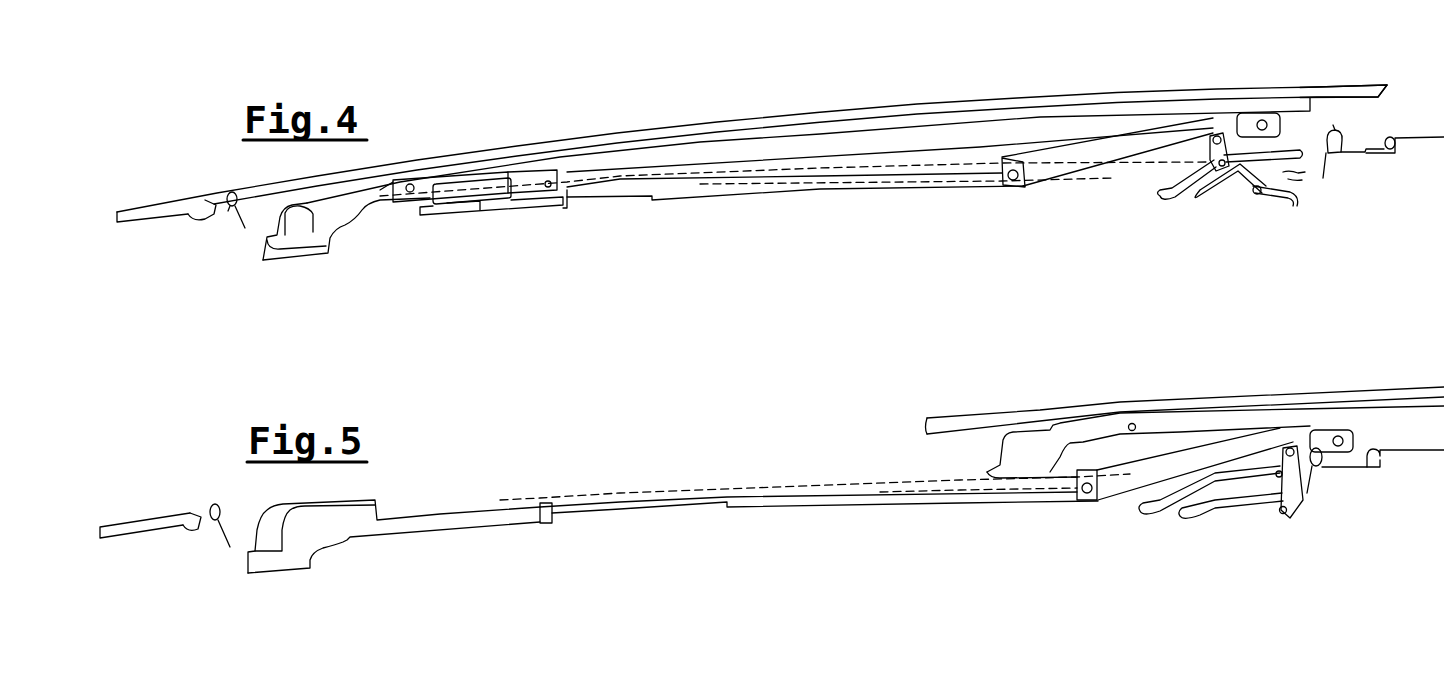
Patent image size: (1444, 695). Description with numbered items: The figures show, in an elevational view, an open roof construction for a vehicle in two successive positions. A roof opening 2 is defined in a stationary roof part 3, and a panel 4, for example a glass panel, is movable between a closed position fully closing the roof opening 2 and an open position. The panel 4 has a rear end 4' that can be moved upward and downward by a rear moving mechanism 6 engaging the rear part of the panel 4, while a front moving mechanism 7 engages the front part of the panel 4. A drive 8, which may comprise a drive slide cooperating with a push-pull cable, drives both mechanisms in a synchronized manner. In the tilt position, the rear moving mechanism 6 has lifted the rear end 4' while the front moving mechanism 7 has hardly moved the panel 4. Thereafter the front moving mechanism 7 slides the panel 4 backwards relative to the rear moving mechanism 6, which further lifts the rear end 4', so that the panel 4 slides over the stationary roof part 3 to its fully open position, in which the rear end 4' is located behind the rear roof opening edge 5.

In FIG. 5, the roof opening 2 is at (688, 445).
In FIG. 4, the stationary roof part 3 is at (153, 205).
In FIG. 4, the panel 4 is at (752, 134).
In FIG. 5, the panel 4 is at (1185, 370).
In FIG. 4, the rear end 4' is at (1343, 58).
In FIG. 4, the rear roof opening edge 5 is at (1330, 170).
In FIG. 5, the rear roof opening edge 5 is at (1313, 482).
In FIG. 4, the rear moving mechanism 6 is at (1240, 207).
In FIG. 5, the rear moving mechanism 6 is at (1224, 526).
In FIG. 4, the front moving mechanism 7 is at (468, 230).
In FIG. 5, the front moving mechanism 7 is at (460, 542).
In FIG. 4, the drive 8 is at (741, 190).
In FIG. 5, the drive 8 is at (848, 497).